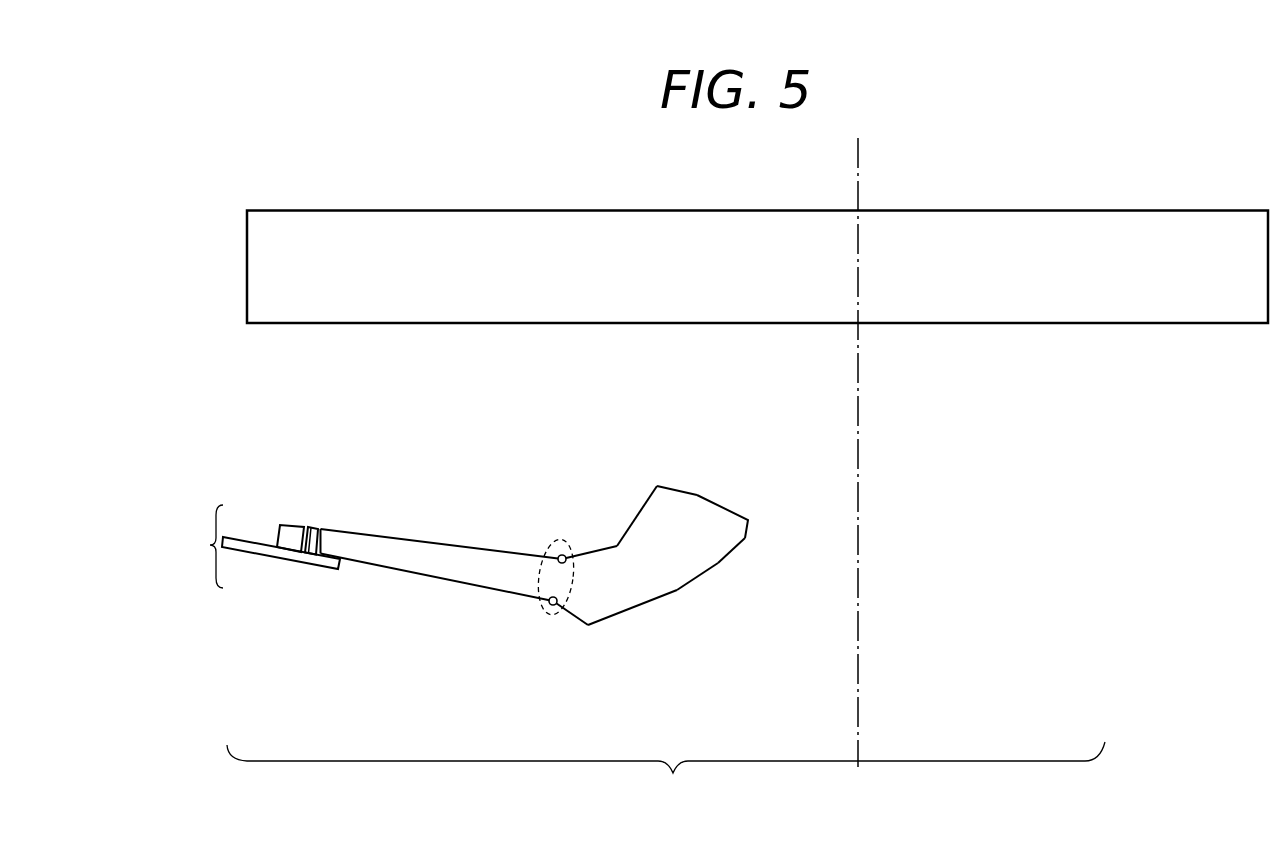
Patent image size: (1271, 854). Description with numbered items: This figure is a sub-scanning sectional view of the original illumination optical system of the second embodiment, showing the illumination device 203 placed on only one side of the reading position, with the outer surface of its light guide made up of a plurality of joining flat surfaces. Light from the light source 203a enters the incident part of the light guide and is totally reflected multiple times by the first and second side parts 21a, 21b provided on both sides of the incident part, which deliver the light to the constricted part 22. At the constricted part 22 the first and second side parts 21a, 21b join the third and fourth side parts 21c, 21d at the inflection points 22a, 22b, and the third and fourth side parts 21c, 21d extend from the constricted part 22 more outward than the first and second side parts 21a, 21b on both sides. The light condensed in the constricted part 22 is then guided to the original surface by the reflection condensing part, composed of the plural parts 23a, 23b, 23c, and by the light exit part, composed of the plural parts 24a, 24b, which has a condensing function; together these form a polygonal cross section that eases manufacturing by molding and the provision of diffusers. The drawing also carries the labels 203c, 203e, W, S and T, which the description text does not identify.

The illumination device 203 is at (666, 777).
The light source 203a is at (292, 532).
The base plate 203c is at (263, 555).
The vibrating body unit 203e is at (188, 546).
The weight / width portion W is at (314, 526).
The first side part 21a is at (410, 538).
The second side part 21b is at (373, 567).
The third side part 21c is at (587, 552).
The fourth side part 21d is at (577, 622).
The constricted part 22 is at (550, 545).
The inflection point of constricted part 22a is at (565, 553).
The inflection point of constricted part 22b is at (548, 608).
The reflection condensing part 23a is at (622, 613).
The reflection condensing part 23b is at (675, 590).
The reflection condensing part 23c is at (723, 558).
The light exit part 24a is at (678, 487).
The light exit part 24b is at (733, 507).
The space S is at (488, 538).
The tip edge of head portion T is at (631, 513).